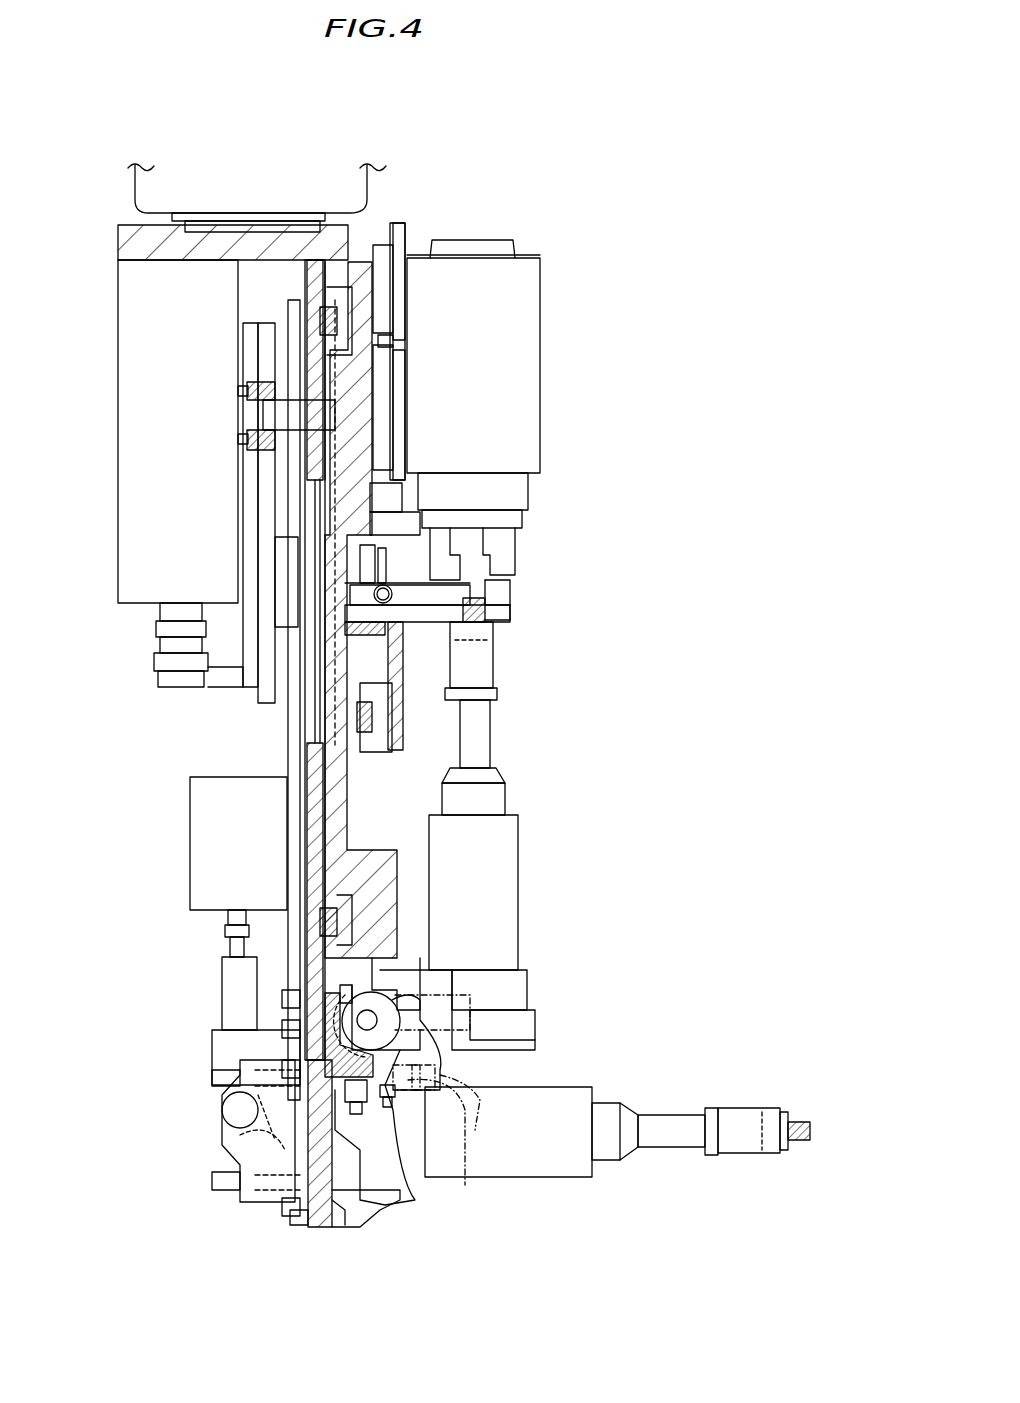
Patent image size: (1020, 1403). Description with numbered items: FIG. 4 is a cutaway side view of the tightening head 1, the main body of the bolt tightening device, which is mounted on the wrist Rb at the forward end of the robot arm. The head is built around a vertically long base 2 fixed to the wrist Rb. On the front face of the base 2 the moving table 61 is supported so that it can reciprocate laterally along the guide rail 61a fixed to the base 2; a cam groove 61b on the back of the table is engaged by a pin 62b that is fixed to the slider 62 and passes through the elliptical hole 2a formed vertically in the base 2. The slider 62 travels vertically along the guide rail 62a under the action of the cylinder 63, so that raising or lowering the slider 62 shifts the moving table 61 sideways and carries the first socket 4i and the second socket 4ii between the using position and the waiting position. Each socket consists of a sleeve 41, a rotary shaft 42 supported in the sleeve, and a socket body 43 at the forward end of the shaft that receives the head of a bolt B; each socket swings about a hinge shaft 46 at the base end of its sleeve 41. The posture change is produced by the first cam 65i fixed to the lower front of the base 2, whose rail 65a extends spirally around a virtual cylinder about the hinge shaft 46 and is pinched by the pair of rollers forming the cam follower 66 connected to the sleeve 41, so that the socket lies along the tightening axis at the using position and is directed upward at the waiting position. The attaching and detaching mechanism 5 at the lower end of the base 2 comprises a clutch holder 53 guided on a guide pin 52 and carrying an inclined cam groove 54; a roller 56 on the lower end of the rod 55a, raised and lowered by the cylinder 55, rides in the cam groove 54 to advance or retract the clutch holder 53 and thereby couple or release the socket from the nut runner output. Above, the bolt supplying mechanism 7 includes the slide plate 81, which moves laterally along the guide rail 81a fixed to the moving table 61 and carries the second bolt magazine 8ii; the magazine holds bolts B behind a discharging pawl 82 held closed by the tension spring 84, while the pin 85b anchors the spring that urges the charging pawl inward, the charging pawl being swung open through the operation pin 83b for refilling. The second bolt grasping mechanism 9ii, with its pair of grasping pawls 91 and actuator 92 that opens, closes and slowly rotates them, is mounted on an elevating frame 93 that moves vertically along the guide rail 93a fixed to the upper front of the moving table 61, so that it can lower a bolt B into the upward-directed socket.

The wrist Rb is at (372, 174).
The tightening head 1 is at (412, 225).
The base 2 is at (320, 1228).
The elliptical hole 2a is at (318, 748).
The first socket 4i is at (583, 1085).
The second socket 4ii is at (528, 882).
The sleeve 41 is at (518, 939).
The rotary shaft 42 is at (490, 744).
The socket body 43 is at (495, 672).
The hinge shaft 46 is at (408, 1040).
The attaching and detaching mechanism 5 is at (190, 1180).
The guide pin 52 is at (212, 1077).
The clutch holder 53 is at (355, 1228).
The cam groove 54 is at (240, 1118).
The cylinder 55 is at (190, 829).
The rod 55a is at (222, 1005).
The roller 56 is at (223, 1106).
The moving table 61 is at (358, 829).
The guide rail 61a is at (324, 312).
The cam groove 61b is at (330, 450).
The slider 62 is at (267, 700).
The slide column 62a is at (285, 672).
The pin 62b is at (330, 408).
The cylinder 63 is at (118, 439).
The rail 65a is at (412, 1020).
The first cam 65i is at (360, 1012).
The cam follower 66 is at (410, 1000).
The bolt supplying mechanism 7 is at (597, 418).
The second bolt magazine 8ii is at (520, 594).
The slide plate 81 is at (405, 743).
The guide rail 81a is at (372, 733).
The discharging pawl 82 is at (438, 605).
The operation pin 83b is at (365, 545).
The tension spring 84 is at (395, 615).
The pin 85b is at (386, 578).
The second bolt grasping mechanism 9ii is at (545, 378).
The grasping pawls 91 is at (455, 562).
The actuator 92 is at (540, 324).
The elevating frame 93 is at (405, 350).
The guide rail 93a is at (395, 450).
The bolt B is at (485, 612).